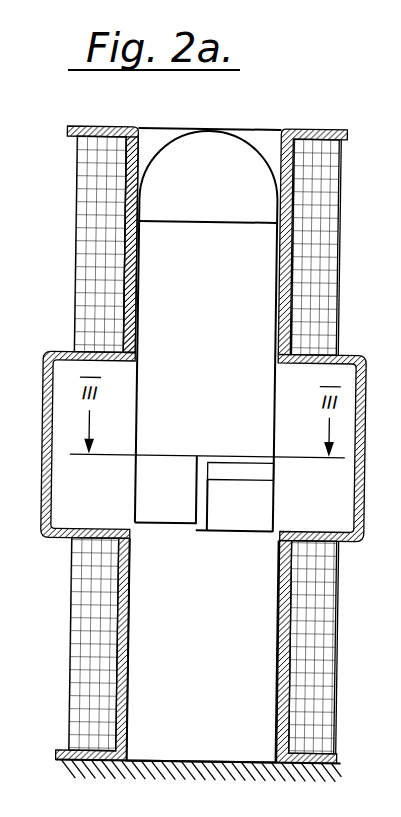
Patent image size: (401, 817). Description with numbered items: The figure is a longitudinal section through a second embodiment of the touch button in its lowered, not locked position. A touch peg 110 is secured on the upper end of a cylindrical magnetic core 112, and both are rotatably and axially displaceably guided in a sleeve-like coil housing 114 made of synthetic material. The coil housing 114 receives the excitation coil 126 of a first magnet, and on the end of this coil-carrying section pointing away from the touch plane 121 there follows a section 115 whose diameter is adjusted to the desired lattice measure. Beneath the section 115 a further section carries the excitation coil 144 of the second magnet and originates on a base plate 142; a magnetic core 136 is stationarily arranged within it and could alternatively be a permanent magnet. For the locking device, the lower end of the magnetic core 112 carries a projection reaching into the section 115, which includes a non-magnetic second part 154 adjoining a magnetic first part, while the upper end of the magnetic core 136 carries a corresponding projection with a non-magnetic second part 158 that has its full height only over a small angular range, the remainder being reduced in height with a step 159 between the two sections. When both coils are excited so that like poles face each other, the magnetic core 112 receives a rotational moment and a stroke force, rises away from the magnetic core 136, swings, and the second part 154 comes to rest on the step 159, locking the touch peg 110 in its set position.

The touch peg 110 is at (226, 150).
The touch plane 121 is at (323, 129).
The excitation coil 126 is at (322, 232).
The coil housing 114 is at (130, 273).
The magnetic core 112 is at (190, 331).
The section 115 is at (357, 438).
The second part 154 is at (144, 491).
The step 159 is at (265, 472).
The second part 158 is at (266, 516).
The magnetic core 136 is at (185, 637).
The excitation coil 144 is at (320, 650).
The base plate 142 is at (159, 767).